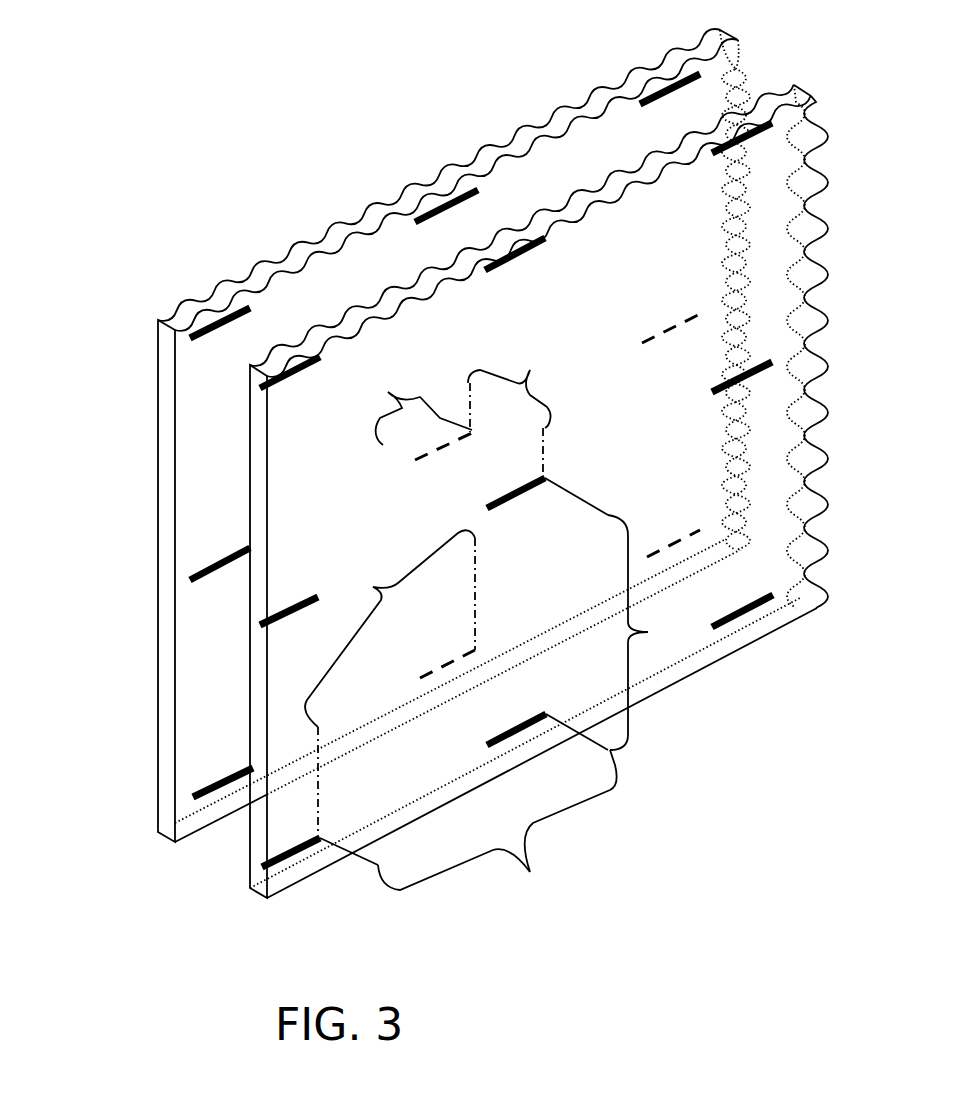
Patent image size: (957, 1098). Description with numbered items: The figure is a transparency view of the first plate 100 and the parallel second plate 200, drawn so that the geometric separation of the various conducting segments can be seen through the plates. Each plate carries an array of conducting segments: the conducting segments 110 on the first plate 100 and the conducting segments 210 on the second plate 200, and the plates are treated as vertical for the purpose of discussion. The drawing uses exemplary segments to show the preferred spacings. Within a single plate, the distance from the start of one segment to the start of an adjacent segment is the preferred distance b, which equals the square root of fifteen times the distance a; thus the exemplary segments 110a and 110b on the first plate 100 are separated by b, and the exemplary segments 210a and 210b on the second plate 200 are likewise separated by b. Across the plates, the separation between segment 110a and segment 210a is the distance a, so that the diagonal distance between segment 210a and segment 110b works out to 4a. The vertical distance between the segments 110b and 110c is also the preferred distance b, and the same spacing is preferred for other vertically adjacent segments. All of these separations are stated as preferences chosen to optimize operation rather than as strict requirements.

The first plate 100 is at (595, 107).
The second plate 200 is at (670, 147).
The conducting segments 110 is at (220, 560).
The exemplary segment 110a is at (213, 780).
The exemplary segment 110b is at (423, 670).
The exemplary segment 110c is at (444, 452).
The conducting segments 210 is at (288, 606).
The exemplary segment 210a is at (290, 852).
The exemplary segment 210b is at (530, 713).
The distance between plates' paired segments a is at (460, 386).
The diagonal distance 4a is at (390, 628).
The distance between adjacent segments b is at (527, 710).